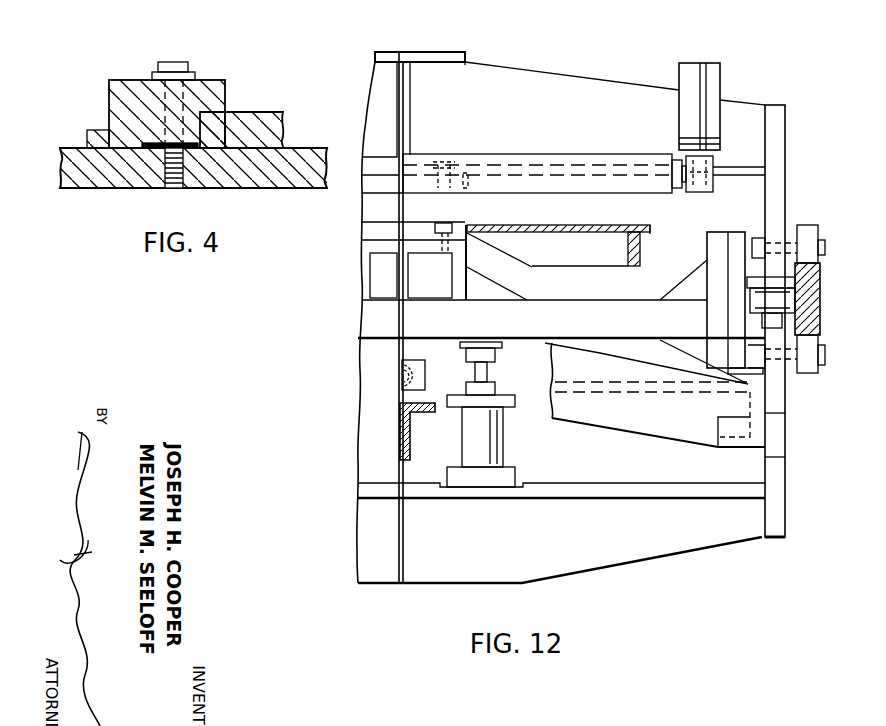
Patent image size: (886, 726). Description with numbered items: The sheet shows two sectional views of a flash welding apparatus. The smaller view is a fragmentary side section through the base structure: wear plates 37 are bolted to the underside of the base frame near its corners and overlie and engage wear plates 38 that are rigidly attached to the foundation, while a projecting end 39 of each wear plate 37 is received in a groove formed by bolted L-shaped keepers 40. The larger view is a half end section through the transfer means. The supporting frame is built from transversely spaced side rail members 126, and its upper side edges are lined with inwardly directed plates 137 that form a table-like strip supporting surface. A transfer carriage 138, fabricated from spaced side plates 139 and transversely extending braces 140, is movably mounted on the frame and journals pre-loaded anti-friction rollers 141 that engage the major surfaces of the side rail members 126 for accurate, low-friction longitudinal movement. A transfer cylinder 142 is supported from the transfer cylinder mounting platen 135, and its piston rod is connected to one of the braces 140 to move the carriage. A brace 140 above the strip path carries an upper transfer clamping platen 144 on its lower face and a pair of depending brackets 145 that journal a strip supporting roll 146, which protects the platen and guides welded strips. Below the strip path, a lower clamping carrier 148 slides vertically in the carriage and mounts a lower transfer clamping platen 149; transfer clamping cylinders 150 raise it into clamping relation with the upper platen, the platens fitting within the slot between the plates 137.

In FIG. 4, the wear plate 37 is at (280, 120).
In FIG. 4, the wear plate 38 is at (253, 178).
In FIG. 4, the projecting end 39 is at (223, 111).
In FIG. 4, the L-shaped keeper 40 is at (128, 100).
In FIG. 12, the side rail member 126 is at (808, 282).
In FIG. 12, the transfer cylinder mounting platen 135 is at (408, 432).
In FIG. 12, the plate 137 is at (640, 250).
In FIG. 12, the transfer carriage 138 is at (777, 152).
In FIG. 12, the side plate 139 is at (782, 415).
In FIG. 12, the transversely extending brace 140 is at (737, 110).
In FIG. 12, the anti-friction roller 141 is at (805, 228).
In FIG. 12, the transfer cylinder 142 is at (400, 375).
In FIG. 12, the upper transfer clamping platen 144 is at (413, 185).
In FIG. 12, the depending bracket 145 is at (710, 78).
In FIG. 12, the strip supporting roll 146 is at (600, 162).
In FIG. 12, the lower clamping carrier 148 is at (630, 312).
In FIG. 12, the lower transfer clamping platen 149 is at (460, 223).
In FIG. 12, the transfer clamping cylinder 150 is at (485, 452).